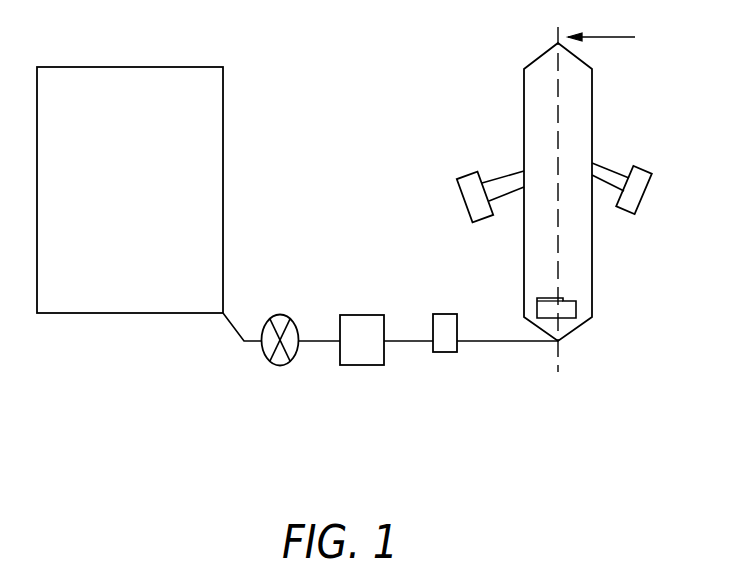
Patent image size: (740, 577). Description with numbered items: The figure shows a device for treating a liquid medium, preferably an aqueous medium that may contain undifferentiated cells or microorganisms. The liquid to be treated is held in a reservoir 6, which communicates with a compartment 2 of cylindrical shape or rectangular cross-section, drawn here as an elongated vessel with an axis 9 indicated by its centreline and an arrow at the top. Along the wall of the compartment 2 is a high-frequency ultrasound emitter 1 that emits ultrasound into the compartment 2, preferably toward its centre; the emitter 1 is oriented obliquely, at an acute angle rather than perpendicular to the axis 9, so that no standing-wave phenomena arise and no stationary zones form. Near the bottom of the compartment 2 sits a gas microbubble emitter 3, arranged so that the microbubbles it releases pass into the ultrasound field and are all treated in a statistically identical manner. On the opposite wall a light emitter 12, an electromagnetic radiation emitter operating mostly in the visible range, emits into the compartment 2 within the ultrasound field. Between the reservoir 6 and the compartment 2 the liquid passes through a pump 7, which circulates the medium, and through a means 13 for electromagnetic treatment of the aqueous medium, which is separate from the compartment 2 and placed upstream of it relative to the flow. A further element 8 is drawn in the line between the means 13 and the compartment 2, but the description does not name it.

The ultrasound emitter 1 is at (607, 182).
The compartment 2 is at (538, 130).
The gas microbubble emitter 3 is at (570, 311).
The reservoir 6 is at (107, 291).
The pump 7 is at (281, 360).
The valve 8 is at (445, 343).
The axis 9 is at (611, 39).
The light emitter 12 is at (472, 197).
The means for electromagnetic treatment 13 is at (363, 353).